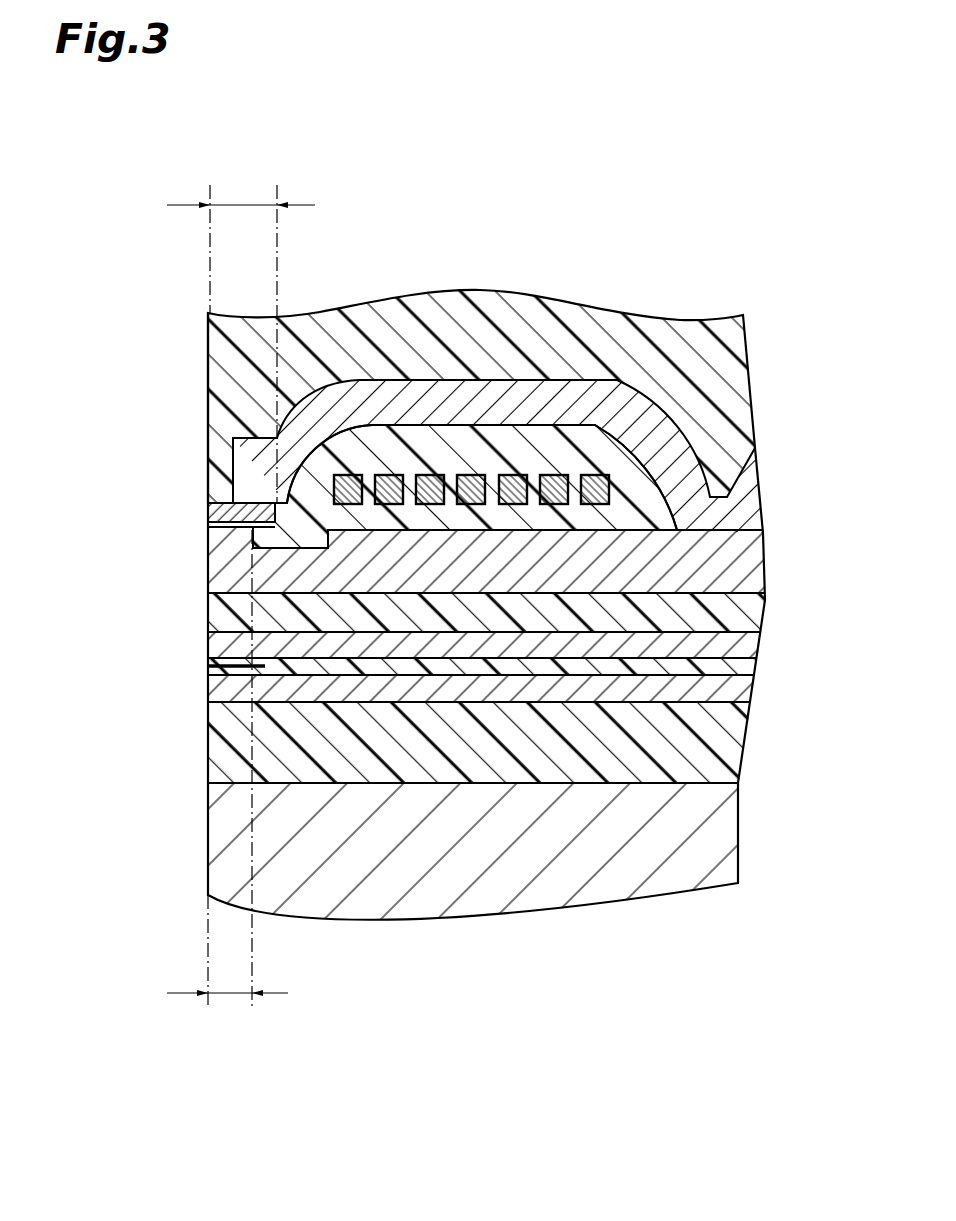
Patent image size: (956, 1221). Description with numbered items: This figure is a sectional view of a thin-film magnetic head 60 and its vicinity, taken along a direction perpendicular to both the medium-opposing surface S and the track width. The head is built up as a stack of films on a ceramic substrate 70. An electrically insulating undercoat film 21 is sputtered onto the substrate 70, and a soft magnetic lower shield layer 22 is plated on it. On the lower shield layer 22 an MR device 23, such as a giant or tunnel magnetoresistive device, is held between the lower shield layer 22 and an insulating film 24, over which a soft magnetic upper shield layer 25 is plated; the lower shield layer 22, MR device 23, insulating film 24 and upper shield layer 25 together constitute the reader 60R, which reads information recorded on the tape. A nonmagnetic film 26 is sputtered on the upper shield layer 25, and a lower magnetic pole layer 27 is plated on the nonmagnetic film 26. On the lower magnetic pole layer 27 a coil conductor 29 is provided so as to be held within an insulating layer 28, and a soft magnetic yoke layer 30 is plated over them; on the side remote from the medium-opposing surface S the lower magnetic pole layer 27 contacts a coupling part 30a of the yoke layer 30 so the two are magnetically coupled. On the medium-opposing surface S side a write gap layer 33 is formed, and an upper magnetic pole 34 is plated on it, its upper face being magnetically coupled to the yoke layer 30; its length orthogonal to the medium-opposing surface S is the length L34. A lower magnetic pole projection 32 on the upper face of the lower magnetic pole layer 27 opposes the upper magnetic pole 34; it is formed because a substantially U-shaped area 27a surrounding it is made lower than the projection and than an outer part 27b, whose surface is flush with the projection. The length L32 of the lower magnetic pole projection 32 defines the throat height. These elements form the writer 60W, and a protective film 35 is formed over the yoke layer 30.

The thin-film magnetic head 60 is at (65, 522).
The writer 60W is at (453, 423).
The reader 60R is at (449, 687).
The medium-opposing surface S is at (211, 330).
The protective film 35 is at (740, 388).
The yoke layer 30 is at (443, 385).
The coupling part 30a is at (690, 508).
The insulating layer 28 is at (633, 492).
The coil conductor 29 is at (592, 477).
The upper magnetic pole 34 is at (210, 512).
The write gap layer 33 is at (210, 526).
The lower magnetic pole projection 32 is at (210, 540).
The lower magnetic pole layer 27 is at (757, 562).
The substantially U-shaped area 27a is at (312, 521).
The outer part 27b is at (370, 545).
The nonmagnetic film 26 is at (757, 614).
The upper shield layer 25 is at (757, 647).
The insulating film 24 is at (757, 669).
The MR device 23 is at (232, 670).
The lower shield layer 22 is at (750, 688).
The undercoat film 21 is at (740, 733).
The substrate 70 is at (728, 820).
The length of the upper magnetic pole L34 is at (246, 203).
The length of the lower magnetic pole projection L32 is at (227, 793).